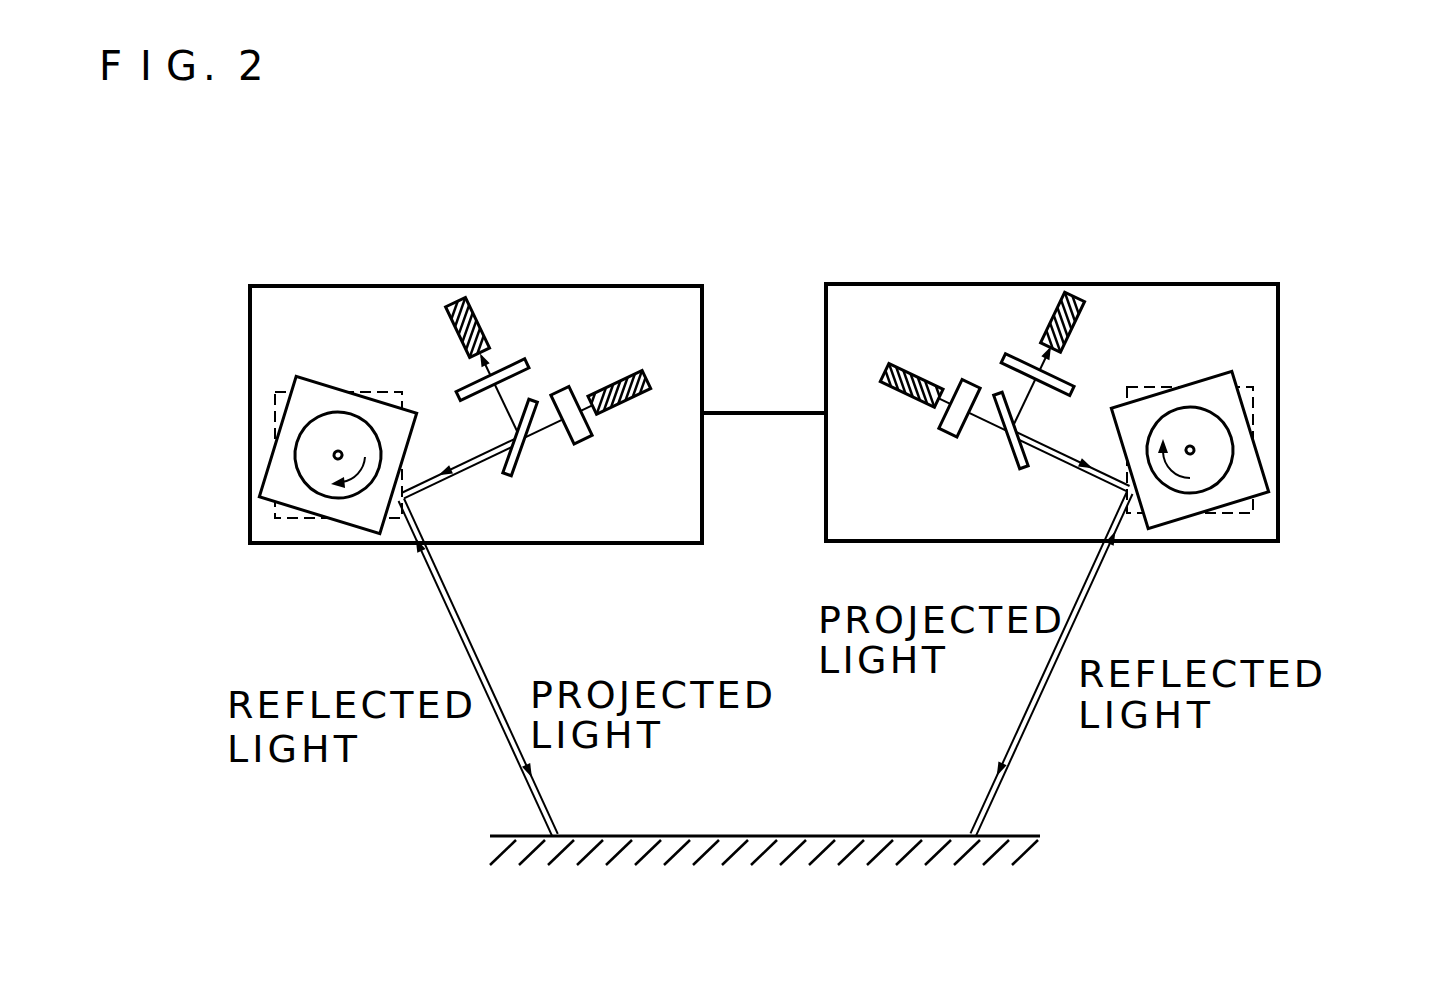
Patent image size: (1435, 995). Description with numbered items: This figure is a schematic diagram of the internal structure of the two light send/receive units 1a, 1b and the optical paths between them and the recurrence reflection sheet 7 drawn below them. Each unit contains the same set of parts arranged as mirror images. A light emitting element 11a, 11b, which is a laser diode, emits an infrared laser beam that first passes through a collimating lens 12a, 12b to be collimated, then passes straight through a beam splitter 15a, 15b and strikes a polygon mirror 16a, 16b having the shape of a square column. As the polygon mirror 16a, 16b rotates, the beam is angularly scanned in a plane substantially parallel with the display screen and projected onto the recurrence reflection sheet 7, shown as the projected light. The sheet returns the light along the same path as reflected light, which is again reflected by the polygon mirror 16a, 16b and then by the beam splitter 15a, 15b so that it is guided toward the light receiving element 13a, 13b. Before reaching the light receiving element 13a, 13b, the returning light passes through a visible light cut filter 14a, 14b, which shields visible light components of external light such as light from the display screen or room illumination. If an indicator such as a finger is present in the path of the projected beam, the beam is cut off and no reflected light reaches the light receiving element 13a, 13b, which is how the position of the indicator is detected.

The light send/receive unit 1a is at (295, 285).
The light send/receive unit 1b is at (870, 283).
The recurrence reflection sheet 7 is at (1032, 833).
The light emitting element 11a is at (624, 402).
The light emitting element 11b is at (907, 395).
The collimating lens 12a is at (561, 391).
The collimating lens 12b is at (963, 385).
The light receiving element 13a is at (453, 337).
The light receiving element 13b is at (1080, 324).
The visible light cut filter 14a is at (518, 362).
The visible light cut filter 14b is at (1008, 356).
The beam splitter 15a is at (527, 452).
The beam splitter 15b is at (1007, 452).
The polygon mirror 16a is at (335, 385).
The polygon mirror 16b is at (1207, 377).